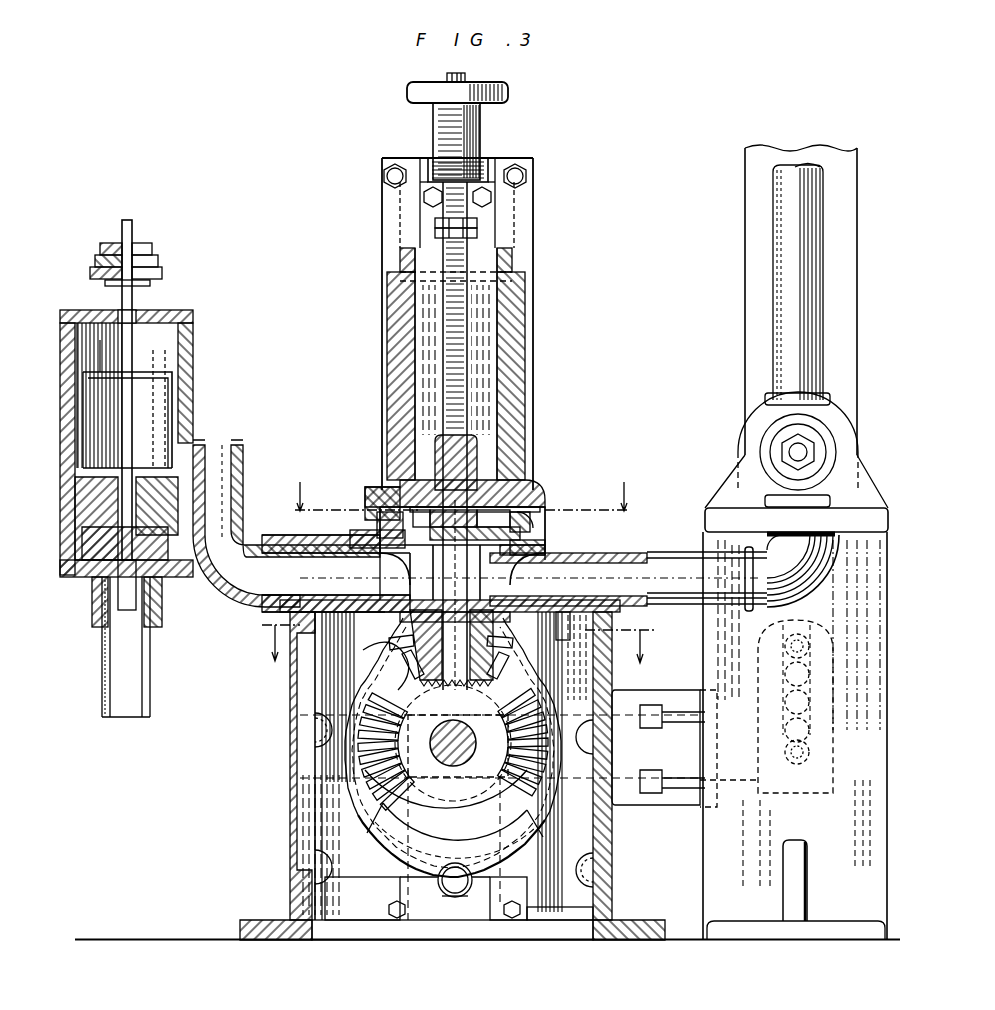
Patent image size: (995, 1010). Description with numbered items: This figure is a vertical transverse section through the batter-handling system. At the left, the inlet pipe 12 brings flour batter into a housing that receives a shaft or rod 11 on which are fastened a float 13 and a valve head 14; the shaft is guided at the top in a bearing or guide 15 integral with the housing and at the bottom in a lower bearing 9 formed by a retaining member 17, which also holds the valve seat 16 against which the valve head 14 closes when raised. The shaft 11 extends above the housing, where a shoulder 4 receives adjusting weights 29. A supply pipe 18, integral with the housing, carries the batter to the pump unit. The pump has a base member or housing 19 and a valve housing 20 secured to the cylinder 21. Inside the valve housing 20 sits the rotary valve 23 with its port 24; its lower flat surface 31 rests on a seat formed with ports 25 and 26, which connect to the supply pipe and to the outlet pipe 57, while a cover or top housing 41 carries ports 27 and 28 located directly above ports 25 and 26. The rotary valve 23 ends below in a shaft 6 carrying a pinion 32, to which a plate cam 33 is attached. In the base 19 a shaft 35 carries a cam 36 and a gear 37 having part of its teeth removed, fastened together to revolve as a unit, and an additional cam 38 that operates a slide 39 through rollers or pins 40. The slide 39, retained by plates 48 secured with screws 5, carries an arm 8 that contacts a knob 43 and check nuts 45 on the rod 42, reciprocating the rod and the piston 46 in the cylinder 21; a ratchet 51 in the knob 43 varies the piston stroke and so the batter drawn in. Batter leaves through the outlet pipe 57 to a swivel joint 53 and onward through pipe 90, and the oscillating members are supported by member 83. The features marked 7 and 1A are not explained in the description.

The ratchet 51 is at (466, 76).
The knob 43 is at (432, 128).
The arm 8 is at (480, 168).
The screws 5 is at (386, 176).
The rod 42 is at (424, 197).
The check nuts 45 is at (478, 222).
The plates 48 is at (383, 244).
The piston 46 is at (512, 330).
The port 27 is at (400, 472).
The cylinder 21 is at (527, 452).
The port 28 is at (540, 478).
The cover or top housing 41 is at (528, 490).
The rotary valve 23 is at (540, 505).
The port 24 is at (375, 520).
The port 25 is at (360, 540).
The lower flat surface 31 is at (548, 532).
The valve housing 20 is at (600, 553).
The section line 7 is at (462, 487).
The outlet pipe 57 is at (670, 545).
The shaft 6 is at (452, 690).
The supply pipe 18 is at (215, 462).
The valve seat 16 is at (215, 500).
The bearing or guide 15 is at (100, 312).
The retaining member 17 is at (70, 577).
The inner cylinder 1A is at (193, 372).
The float 13 is at (175, 400).
The shaft or rod 11 is at (132, 292).
The adjusting weights 29 is at (98, 250).
The shoulder 4 is at (150, 283).
The valve head 14 is at (160, 590).
The lower bearing 9 is at (136, 590).
The inlet pipe 12 is at (102, 660).
The base member or housing 19 is at (295, 888).
The additional cam 38 is at (356, 795).
The port 26 is at (565, 640).
The pinion 32 is at (515, 672).
The plate cam 33 is at (520, 653).
The shaft 35 is at (456, 760).
The gear 37 is at (540, 790).
The cam 36 is at (390, 848).
The slide 39 is at (420, 880).
The rollers or pins 40 is at (455, 897).
The supporting member 83 is at (705, 858).
The pipe 90 is at (818, 368).
The swivel joint 53 is at (828, 458).